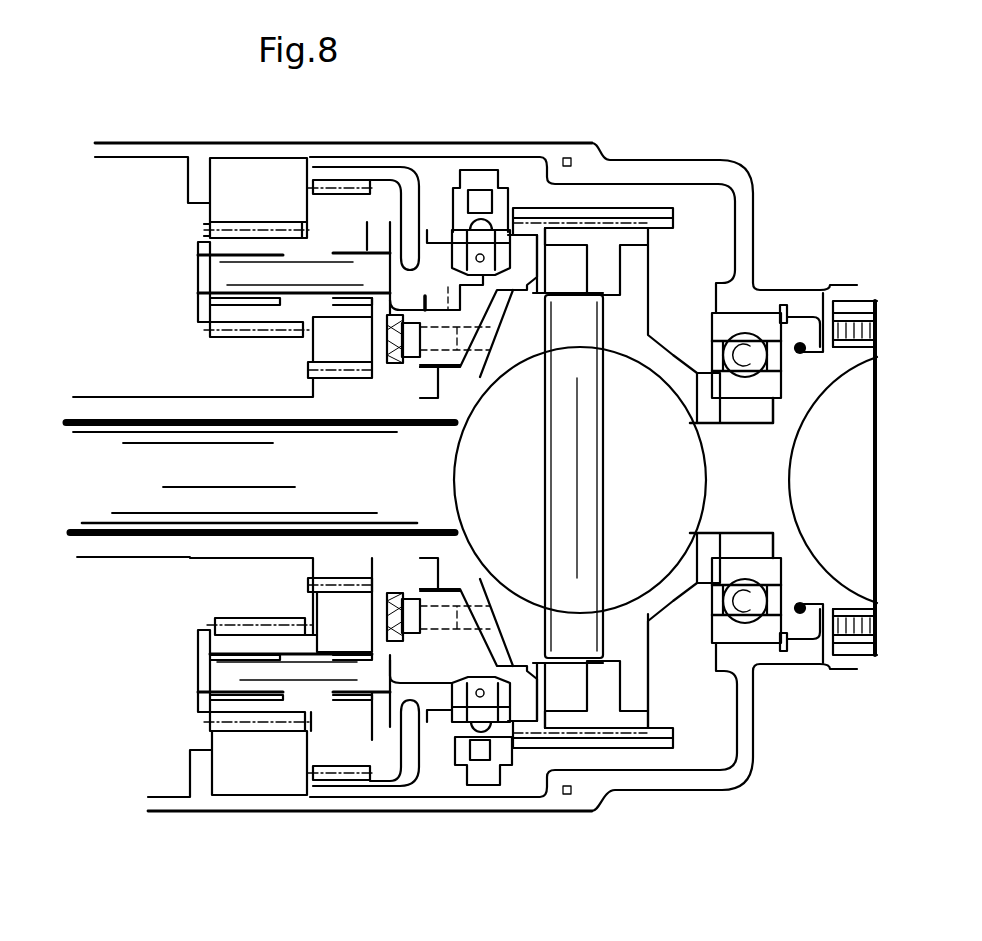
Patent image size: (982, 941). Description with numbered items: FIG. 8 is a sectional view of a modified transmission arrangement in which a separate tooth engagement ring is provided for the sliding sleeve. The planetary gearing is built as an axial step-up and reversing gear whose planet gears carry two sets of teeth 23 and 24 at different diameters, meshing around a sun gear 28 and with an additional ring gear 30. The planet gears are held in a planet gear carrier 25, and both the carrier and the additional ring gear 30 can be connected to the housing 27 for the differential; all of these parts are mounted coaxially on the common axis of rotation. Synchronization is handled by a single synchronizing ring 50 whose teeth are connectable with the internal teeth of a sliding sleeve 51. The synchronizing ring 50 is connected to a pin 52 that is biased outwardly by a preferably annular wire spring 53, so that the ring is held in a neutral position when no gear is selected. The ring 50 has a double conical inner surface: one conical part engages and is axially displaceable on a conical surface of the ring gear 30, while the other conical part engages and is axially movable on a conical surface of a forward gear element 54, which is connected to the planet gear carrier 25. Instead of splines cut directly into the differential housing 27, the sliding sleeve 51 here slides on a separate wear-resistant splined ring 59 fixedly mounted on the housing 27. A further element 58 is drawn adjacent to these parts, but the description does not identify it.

The set of teeth 23 is at (225, 247).
The set of teeth 24 is at (345, 747).
The planet gear carrier 25 is at (220, 665).
The housing for the differential 27 is at (634, 647).
The sun gear 28 is at (193, 410).
The additional ring gear 30 is at (405, 170).
The synchronizing ring 50 is at (498, 695).
The sliding sleeve 51 is at (657, 748).
The pin 52 is at (481, 220).
The wire spring 53 is at (475, 697).
The forward gear element 54 is at (527, 265).
The lower support block 58 is at (597, 708).
The splined ring 59 is at (605, 245).